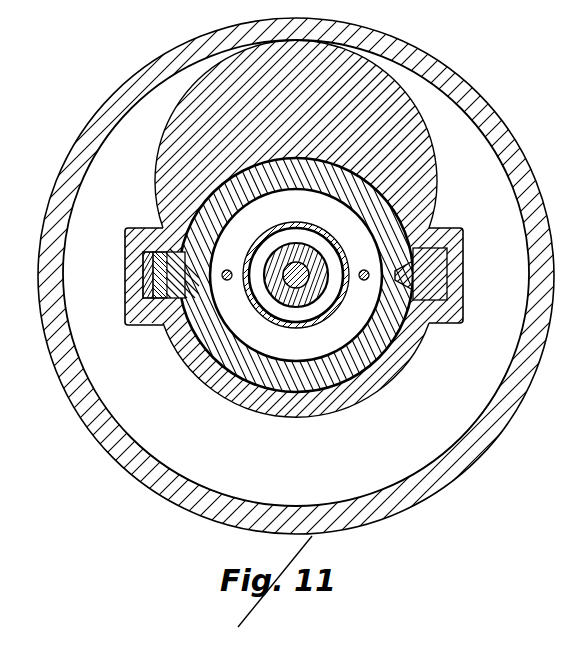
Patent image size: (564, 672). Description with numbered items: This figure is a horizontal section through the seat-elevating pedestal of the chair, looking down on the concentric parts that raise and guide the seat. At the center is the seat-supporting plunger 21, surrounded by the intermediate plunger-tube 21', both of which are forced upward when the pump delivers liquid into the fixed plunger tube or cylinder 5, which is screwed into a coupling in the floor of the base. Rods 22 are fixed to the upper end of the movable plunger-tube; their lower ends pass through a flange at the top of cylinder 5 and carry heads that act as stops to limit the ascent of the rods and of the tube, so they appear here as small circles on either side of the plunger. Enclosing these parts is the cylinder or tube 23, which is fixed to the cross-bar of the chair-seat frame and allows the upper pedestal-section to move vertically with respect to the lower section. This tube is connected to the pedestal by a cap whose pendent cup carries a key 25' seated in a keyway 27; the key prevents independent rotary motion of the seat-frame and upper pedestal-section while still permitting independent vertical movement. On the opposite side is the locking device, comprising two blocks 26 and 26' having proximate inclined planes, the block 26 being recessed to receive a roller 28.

The fixed plunger tube or cylinder 5 is at (328, 304).
The seat-supporting plunger 21 is at (294, 292).
The intermediate plunger-tube 21' is at (298, 249).
The rods 22 is at (232, 264).
The cylinder or tube 23 is at (385, 216).
The key 25' is at (436, 272).
The block or part of locking device 26 is at (139, 276).
The block or part of locking device 26' is at (126, 271).
The keyway 27 is at (408, 288).
The roller 28 is at (158, 270).